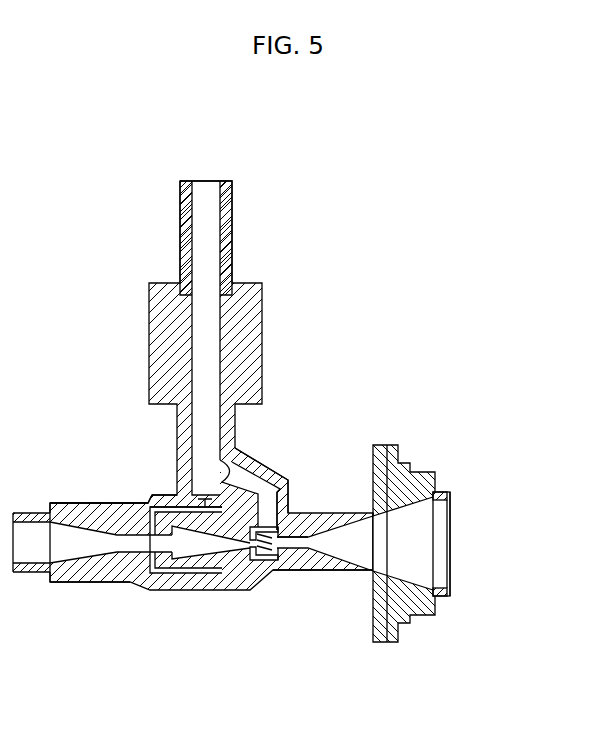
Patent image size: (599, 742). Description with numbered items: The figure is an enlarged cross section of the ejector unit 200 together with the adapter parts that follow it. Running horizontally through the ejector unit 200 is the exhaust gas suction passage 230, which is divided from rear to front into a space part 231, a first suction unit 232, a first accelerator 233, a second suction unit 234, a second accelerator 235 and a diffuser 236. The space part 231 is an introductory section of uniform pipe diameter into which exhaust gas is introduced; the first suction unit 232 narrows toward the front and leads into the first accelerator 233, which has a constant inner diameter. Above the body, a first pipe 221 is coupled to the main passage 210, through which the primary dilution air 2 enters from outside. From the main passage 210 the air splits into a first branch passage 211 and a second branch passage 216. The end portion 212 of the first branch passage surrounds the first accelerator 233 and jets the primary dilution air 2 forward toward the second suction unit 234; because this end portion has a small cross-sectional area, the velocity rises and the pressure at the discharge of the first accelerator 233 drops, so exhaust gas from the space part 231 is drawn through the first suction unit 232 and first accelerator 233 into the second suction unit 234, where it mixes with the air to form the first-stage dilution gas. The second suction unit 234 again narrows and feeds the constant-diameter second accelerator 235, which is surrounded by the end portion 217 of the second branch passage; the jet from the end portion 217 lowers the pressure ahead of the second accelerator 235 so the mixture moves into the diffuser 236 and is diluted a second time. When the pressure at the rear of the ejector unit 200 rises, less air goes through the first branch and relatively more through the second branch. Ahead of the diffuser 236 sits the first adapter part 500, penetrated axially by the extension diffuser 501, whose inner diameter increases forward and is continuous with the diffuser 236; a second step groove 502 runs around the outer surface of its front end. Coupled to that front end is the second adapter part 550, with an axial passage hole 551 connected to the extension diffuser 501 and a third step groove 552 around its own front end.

The primary dilution air 2 is at (205, 160).
The ejector unit 200 is at (129, 307).
The main passage 210 is at (207, 330).
The first branch passage 211 is at (168, 510).
The end portion of the first branch passage 212 is at (142, 502).
The second branch passage 216 is at (253, 461).
The end portion of the second branch passage 217 is at (278, 500).
The first pipe 221 is at (181, 216).
The exhaust gas suction passage 230 is at (338, 666).
The space part 231 is at (37, 560).
The first suction unit 232 is at (82, 545).
The first accelerator 233 is at (133, 543).
The second suction unit 234 is at (185, 542).
The second accelerator 235 is at (260, 552).
The diffuser 236 is at (334, 565).
The first adapter part 500 is at (421, 425).
The extension diffuser 501 is at (427, 518).
The second step groove 502 is at (423, 465).
The second adapter part 550 is at (436, 492).
The passage hole 551 is at (453, 565).
The third step groove 552 is at (450, 495).